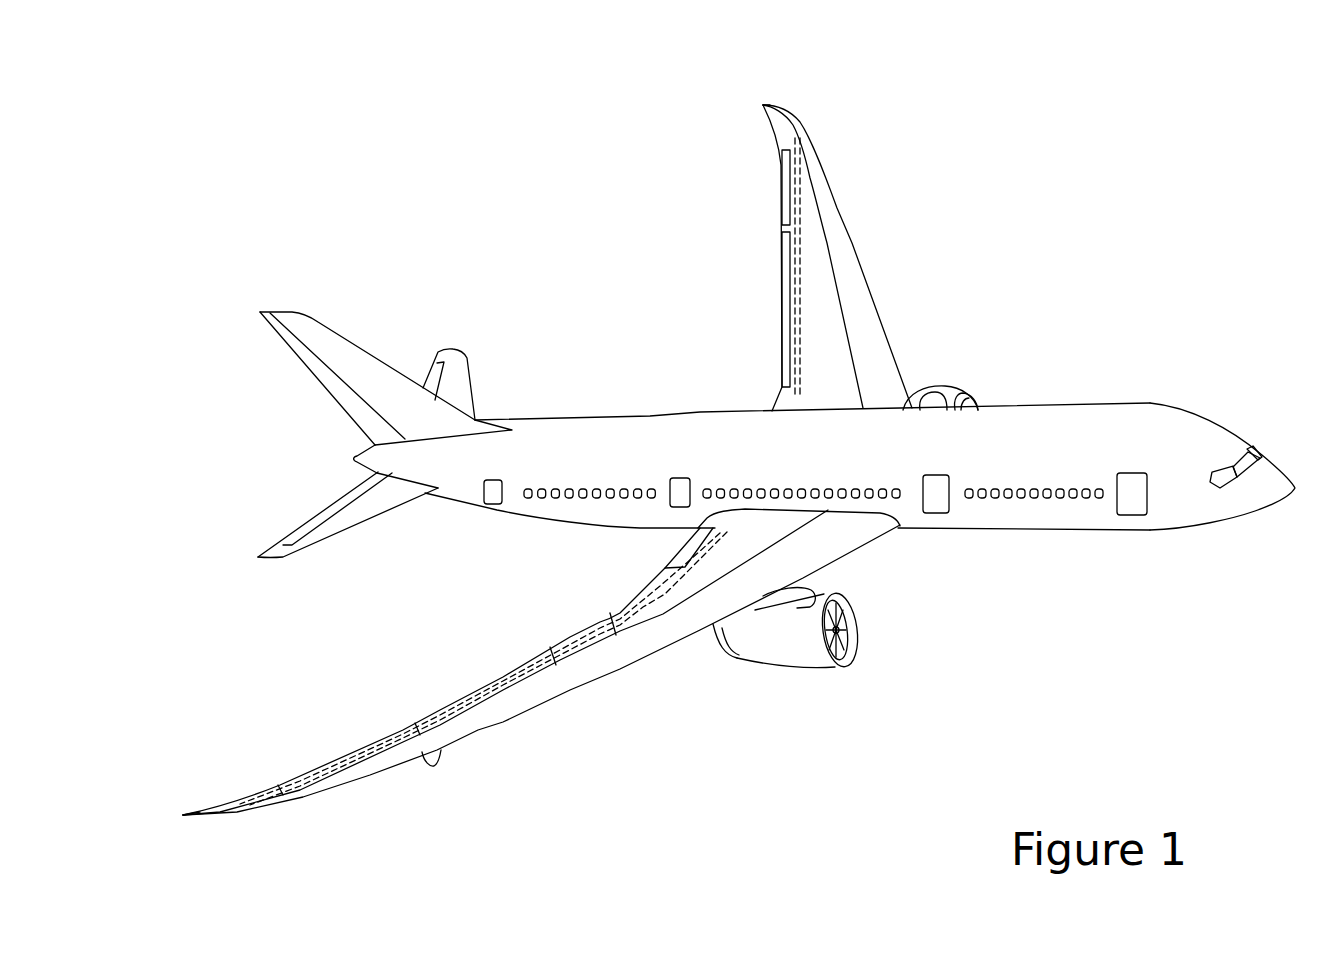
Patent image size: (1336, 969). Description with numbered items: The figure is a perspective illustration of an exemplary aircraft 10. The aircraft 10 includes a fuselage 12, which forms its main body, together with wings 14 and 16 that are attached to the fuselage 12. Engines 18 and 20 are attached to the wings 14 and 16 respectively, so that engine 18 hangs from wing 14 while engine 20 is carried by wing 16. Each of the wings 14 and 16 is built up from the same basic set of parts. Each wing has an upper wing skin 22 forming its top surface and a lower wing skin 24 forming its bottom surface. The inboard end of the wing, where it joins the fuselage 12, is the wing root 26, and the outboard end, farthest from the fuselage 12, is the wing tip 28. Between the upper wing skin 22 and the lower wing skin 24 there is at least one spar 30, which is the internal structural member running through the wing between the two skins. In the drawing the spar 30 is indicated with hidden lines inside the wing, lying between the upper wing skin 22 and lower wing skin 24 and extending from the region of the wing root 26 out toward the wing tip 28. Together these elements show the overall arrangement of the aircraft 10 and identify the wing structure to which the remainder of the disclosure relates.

The aircraft 10 is at (1156, 198).
The fuselage 12 is at (1152, 403).
The wing 14 is at (577, 704).
The wing 16 is at (868, 232).
The engine 18 is at (866, 631).
The engine 20 is at (938, 384).
The upper wing skin 22 is at (873, 345).
The lower wing skin 24 is at (873, 302).
The wing root 26 is at (899, 530).
The wing tip 28 is at (775, 103).
The spar 30 is at (792, 183).